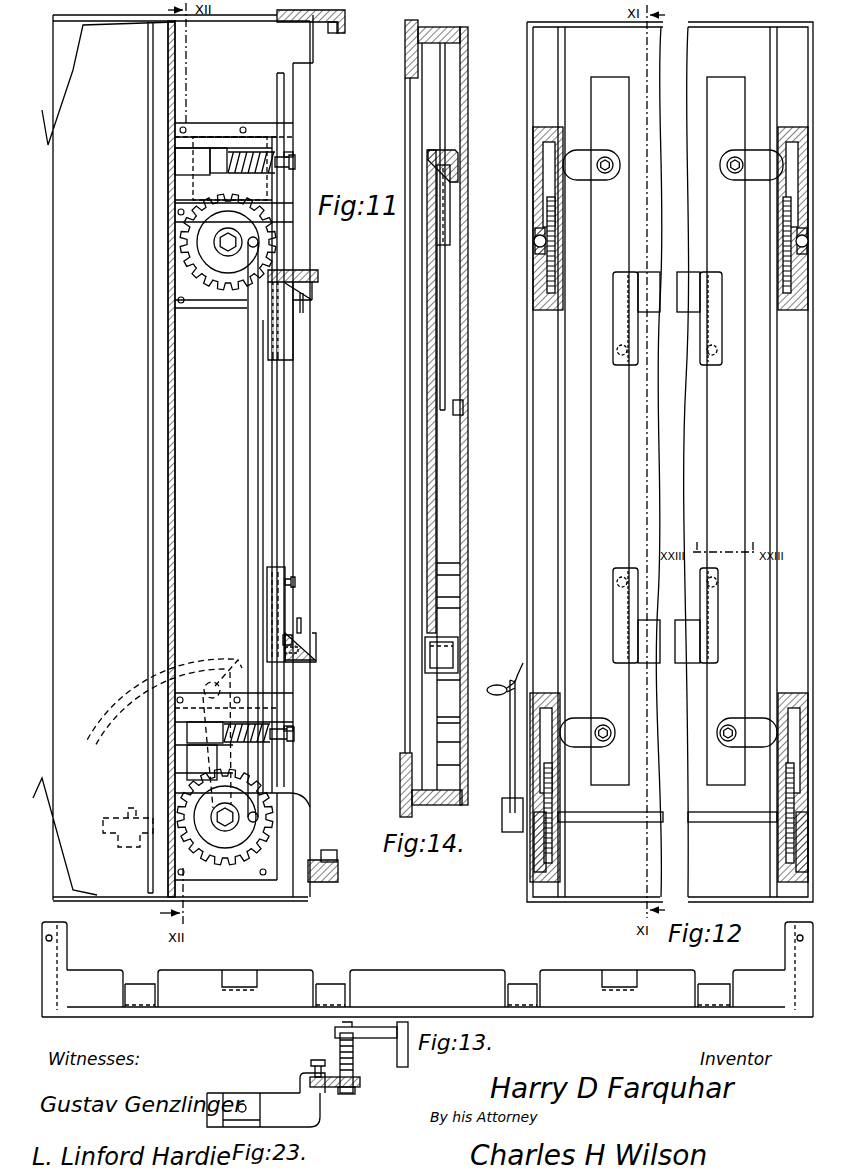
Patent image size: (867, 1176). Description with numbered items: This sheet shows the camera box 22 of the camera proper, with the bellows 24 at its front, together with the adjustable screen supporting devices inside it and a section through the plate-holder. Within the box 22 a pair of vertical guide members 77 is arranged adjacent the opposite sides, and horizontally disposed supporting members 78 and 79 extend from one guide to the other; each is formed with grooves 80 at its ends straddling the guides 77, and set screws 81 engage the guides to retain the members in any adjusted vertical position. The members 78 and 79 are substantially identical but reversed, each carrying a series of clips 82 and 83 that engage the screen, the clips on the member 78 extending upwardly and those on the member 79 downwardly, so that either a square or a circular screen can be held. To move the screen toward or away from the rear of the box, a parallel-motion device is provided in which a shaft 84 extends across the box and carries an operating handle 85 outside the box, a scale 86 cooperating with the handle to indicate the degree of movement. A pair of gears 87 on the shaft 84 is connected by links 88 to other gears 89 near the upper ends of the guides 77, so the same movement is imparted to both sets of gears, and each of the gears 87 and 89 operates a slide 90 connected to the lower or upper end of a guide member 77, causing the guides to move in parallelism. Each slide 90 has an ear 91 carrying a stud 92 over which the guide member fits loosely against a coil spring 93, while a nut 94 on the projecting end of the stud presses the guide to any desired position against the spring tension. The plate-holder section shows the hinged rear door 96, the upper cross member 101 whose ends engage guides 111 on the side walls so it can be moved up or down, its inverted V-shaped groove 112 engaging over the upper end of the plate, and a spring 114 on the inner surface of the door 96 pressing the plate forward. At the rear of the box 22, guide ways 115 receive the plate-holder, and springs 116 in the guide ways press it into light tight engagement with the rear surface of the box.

In FIG. 11, the camera box 22 is at (183, 456).
In FIG. 12, the camera box 22 is at (748, 462).
In FIG. 11, the bellows 24 is at (75, 75).
In FIG. 12, the guide members 77 is at (603, 453).
In FIG. 23, the guide members 77 is at (361, 1082).
In FIG. 12, the supporting member 78 is at (714, 647).
In FIG. 13, the supporting member 78 is at (463, 978).
In FIG. 12, the supporting member 79 is at (650, 297).
In FIG. 23, the grooves 80 is at (325, 1092).
In FIG. 11, the set screws 81 is at (296, 582).
In FIG. 23, the set screws 81 is at (316, 1062).
In FIG. 11, the clips 82 is at (317, 650).
In FIG. 11, the clips 83 is at (303, 627).
In FIG. 12, the shaft 84 is at (703, 818).
In FIG. 12, the operating handle 85 is at (508, 766).
In FIG. 12, the scale 86 is at (523, 665).
In FIG. 11, the gears 87 is at (228, 838).
In FIG. 12, the gears 87 is at (552, 845).
In FIG. 11, the links 88 is at (257, 493).
In FIG. 12, the links 88 is at (567, 536).
In FIG. 11, the gears 89 is at (202, 247).
In FIG. 12, the gears 89 is at (545, 270).
In FIG. 11, the slides 90 is at (200, 165).
In FIG. 12, the slides 90 is at (548, 184).
In FIG. 11, the ear 91 is at (217, 150).
In FIG. 12, the ear 91 is at (573, 170).
In FIG. 11, the stud 92 is at (297, 162).
In FIG. 11, the coil springs 93 is at (256, 150).
In FIG. 11, the nuts 94 is at (297, 152).
In FIG. 14, the door 96 is at (468, 358).
In FIG. 14, the cross member 101 is at (450, 165).
In FIG. 14, the guides 111 is at (442, 318).
In FIG. 14, the inverted V-shaped groove 112 is at (428, 188).
In FIG. 14, the spring 114 is at (463, 410).
In FIG. 11, the guide ways 115 is at (340, 19).
In FIG. 11, the springs 116 is at (338, 33).